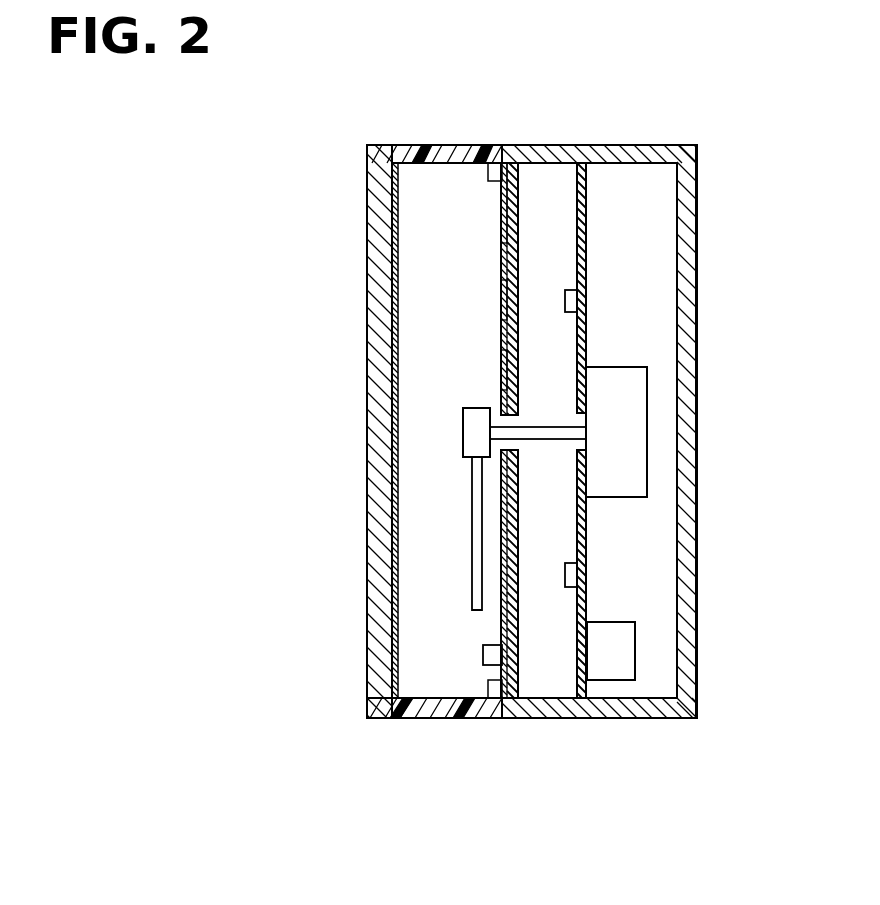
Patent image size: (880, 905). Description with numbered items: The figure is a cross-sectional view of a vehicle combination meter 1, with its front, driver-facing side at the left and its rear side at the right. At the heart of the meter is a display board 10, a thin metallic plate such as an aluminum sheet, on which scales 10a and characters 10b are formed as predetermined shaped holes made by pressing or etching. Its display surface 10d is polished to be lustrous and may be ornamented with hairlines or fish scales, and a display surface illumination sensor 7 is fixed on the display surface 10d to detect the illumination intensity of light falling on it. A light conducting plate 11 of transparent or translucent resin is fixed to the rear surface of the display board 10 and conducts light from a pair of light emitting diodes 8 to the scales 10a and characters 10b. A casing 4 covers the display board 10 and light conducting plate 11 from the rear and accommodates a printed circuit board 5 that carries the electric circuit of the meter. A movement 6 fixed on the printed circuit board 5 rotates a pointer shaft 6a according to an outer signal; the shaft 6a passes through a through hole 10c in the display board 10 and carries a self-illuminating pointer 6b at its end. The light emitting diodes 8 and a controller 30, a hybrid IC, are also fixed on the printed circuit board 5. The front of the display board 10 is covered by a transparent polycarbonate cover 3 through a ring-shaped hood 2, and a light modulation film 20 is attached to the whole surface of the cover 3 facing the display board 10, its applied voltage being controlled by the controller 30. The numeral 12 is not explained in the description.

The combination meter 1 is at (238, 134).
The hood 2 is at (447, 718).
The cover 3 is at (372, 162).
The casing 4 is at (631, 718).
The printed circuit board 5 is at (584, 540).
The movement 6 is at (644, 407).
The pointer shaft 6a is at (554, 434).
The pointer 6b is at (470, 516).
The display surface illumination sensor 7 is at (483, 654).
The light emitting diodes 8 is at (566, 292).
The display board 10 is at (524, 379).
The scales 10a is at (500, 227).
The characters 10b is at (498, 257).
The through hole 10c is at (508, 448).
The display surface 10d is at (500, 303).
The light conducting plate 11 is at (517, 197).
The opening 12 is at (500, 367).
The light modulation film 20 is at (396, 212).
The controller 30 is at (632, 650).